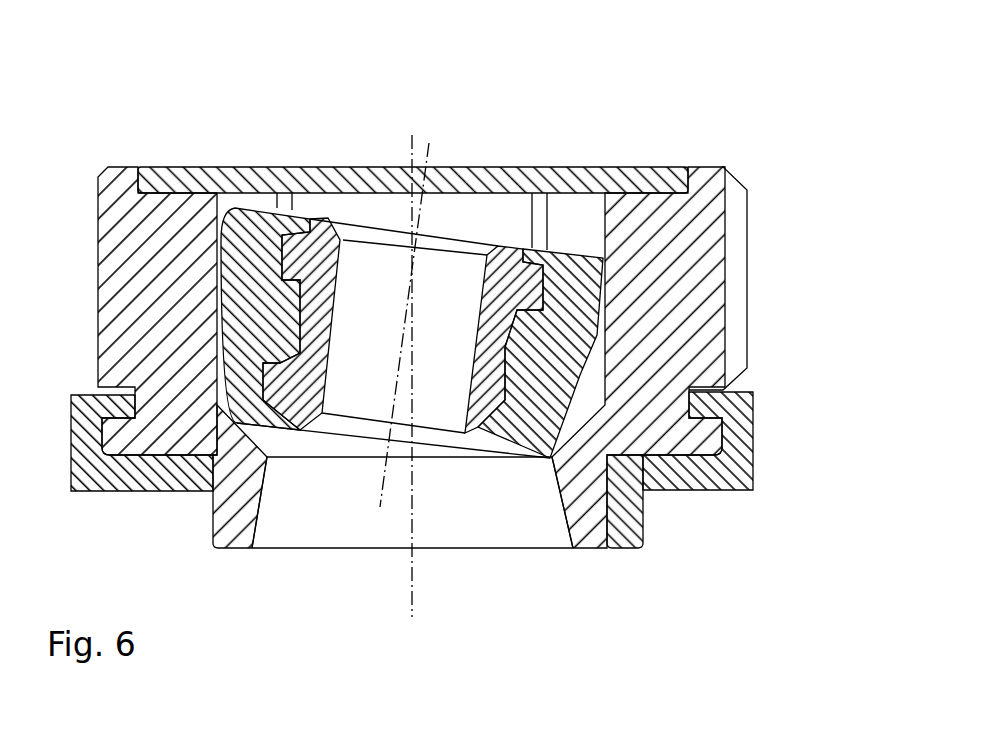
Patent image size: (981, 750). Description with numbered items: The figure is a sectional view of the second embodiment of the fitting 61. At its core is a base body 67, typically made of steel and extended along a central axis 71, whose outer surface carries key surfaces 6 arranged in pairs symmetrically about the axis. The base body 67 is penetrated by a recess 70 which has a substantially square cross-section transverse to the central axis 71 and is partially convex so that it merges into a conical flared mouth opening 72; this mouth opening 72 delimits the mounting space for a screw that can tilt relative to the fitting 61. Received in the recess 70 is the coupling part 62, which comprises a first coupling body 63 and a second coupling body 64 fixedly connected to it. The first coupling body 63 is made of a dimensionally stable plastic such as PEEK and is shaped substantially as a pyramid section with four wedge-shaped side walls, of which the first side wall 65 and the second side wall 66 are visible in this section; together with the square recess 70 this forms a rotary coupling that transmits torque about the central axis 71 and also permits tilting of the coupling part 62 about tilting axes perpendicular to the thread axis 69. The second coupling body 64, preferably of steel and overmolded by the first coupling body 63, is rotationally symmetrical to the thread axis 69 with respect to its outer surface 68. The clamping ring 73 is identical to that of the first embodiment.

The key surfaces 6 is at (733, 267).
The fitting 61 is at (667, 128).
The coupling part 62 is at (375, 268).
The first coupling body 63 is at (250, 242).
The second coupling body 64 is at (518, 280).
The first side wall 65 is at (200, 458).
The second side wall 66 is at (632, 468).
The base body 67 is at (137, 250).
The outer surface 68 is at (550, 458).
The thread axis 69 is at (382, 477).
The recess 70 is at (283, 440).
The central axis 71 is at (410, 155).
The mouth opening 72 is at (567, 528).
The clamping ring 73 is at (718, 477).